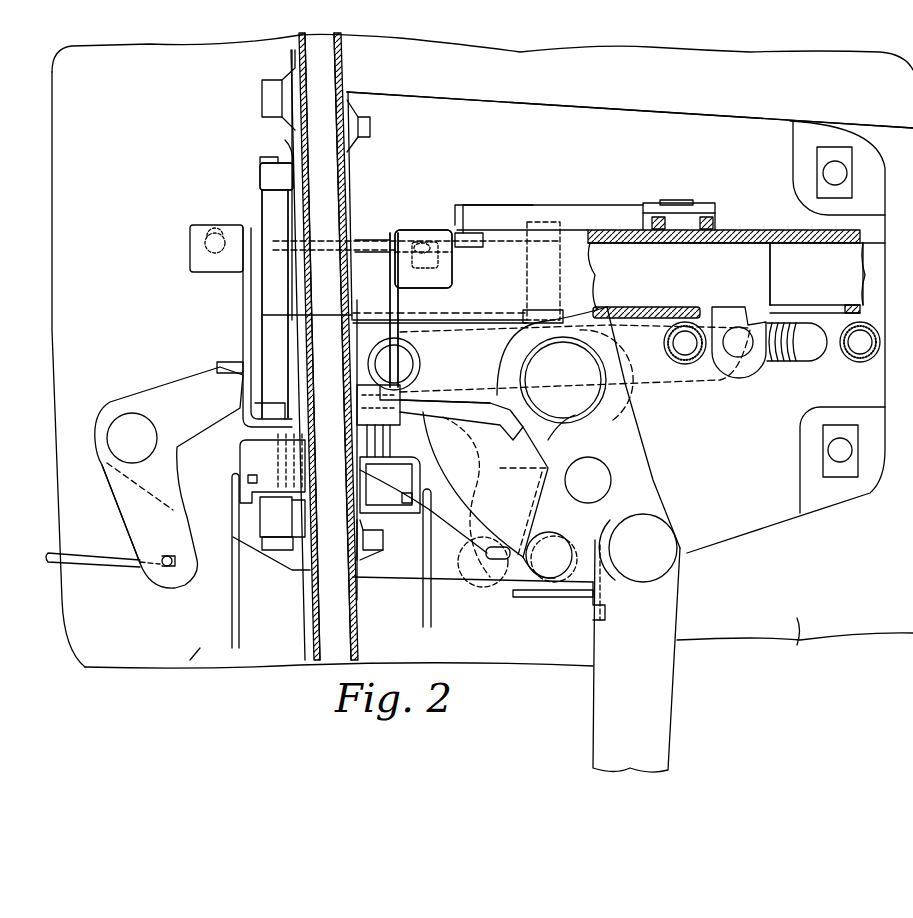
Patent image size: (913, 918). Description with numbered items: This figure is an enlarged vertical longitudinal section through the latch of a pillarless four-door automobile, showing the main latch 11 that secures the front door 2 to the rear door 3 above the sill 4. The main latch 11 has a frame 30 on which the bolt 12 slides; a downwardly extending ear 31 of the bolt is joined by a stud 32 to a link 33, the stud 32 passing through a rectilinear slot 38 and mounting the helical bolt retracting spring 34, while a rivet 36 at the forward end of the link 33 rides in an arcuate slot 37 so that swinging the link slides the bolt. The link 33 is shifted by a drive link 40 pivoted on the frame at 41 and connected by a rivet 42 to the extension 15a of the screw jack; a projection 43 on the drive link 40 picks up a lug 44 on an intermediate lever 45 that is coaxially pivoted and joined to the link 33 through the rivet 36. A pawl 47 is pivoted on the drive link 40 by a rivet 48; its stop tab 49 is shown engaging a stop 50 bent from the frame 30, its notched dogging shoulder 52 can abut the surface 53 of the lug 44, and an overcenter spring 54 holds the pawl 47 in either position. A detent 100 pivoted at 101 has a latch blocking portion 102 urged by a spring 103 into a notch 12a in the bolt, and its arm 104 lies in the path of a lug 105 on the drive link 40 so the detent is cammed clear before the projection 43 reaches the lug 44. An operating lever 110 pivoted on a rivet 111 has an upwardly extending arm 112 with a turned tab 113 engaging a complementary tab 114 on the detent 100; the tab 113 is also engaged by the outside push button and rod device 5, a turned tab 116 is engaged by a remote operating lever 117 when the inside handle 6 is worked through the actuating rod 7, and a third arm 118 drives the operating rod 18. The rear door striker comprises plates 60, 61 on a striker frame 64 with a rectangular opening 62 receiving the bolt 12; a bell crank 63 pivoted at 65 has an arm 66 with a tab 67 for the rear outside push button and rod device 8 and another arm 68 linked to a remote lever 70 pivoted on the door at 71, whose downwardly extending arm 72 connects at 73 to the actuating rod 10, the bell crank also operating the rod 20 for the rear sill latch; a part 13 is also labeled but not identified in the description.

The front door 2 is at (482, 354).
The rear door 3 is at (195, 660).
The sill or rocker panel 4 is at (530, 183).
The push button and rod device 5 is at (320, 60).
The remotely located handle 6 is at (912, 96).
The actuating rod 7 is at (455, 562).
The outside push button and rod device 8 is at (65, 114).
The actuating rod 10 is at (57, 553).
The main latch 11 is at (564, 93).
The bolt 12 is at (322, 262).
The notch 12a is at (527, 248).
The bracket 13 is at (251, 189).
The extension of the screw jack device 15a is at (668, 708).
The operating rod 18 is at (423, 620).
The operating rod 20 is at (241, 640).
The frame 30 is at (458, 97).
The ear 31 is at (762, 313).
The stud 32 is at (748, 355).
The link 33 is at (650, 378).
The helical bolt retracting spring 34 is at (797, 340).
The rivet 36 is at (418, 365).
The arcuate slot 37 is at (418, 437).
The elongated rectilinear slot 38 is at (830, 360).
The drive link 40 is at (647, 484).
The stud 41 is at (598, 368).
The rivet 42 is at (662, 538).
The projection 43 is at (480, 400).
The lug 44 is at (510, 432).
The intermediate lever 45 is at (380, 320).
The pawl 47 is at (496, 548).
The rivet 48 is at (595, 480).
The stop tab 49 is at (593, 612).
The stop 50 is at (513, 595).
The notched dogging shoulder 52 is at (497, 478).
The surface of the lug 53 is at (540, 430).
The overcenter spring 54 is at (565, 548).
The plate 60 is at (300, 202).
The plate 61 is at (276, 338).
The rectangular opening 62 is at (268, 232).
The bell crank 63 is at (230, 314).
The striker frame 64 is at (297, 62).
The pivot 65 is at (271, 502).
The upwardly extending arm 66 is at (245, 282).
The tab 67 is at (194, 250).
The arm 68 is at (218, 364).
The remote lever 70 is at (163, 393).
The pivot 71 is at (120, 428).
The downwardly extending arm 72 is at (143, 519).
The connection 73 is at (173, 570).
The detent 100 is at (540, 213).
The pivot 101 is at (676, 200).
The latch blocking portion 102 is at (470, 230).
The spring 103 is at (703, 205).
The arm 104 is at (530, 236).
The lug 105 is at (578, 308).
The operating lever 110 is at (394, 223).
The rivet 111 is at (380, 508).
The upwardly extending arm 112 is at (390, 297).
The turned tab 113 is at (452, 276).
The complementary tab 114 is at (420, 238).
The turned tab 116 is at (385, 452).
The remote operating lever 117 is at (472, 520).
The third arm 118 is at (390, 540).